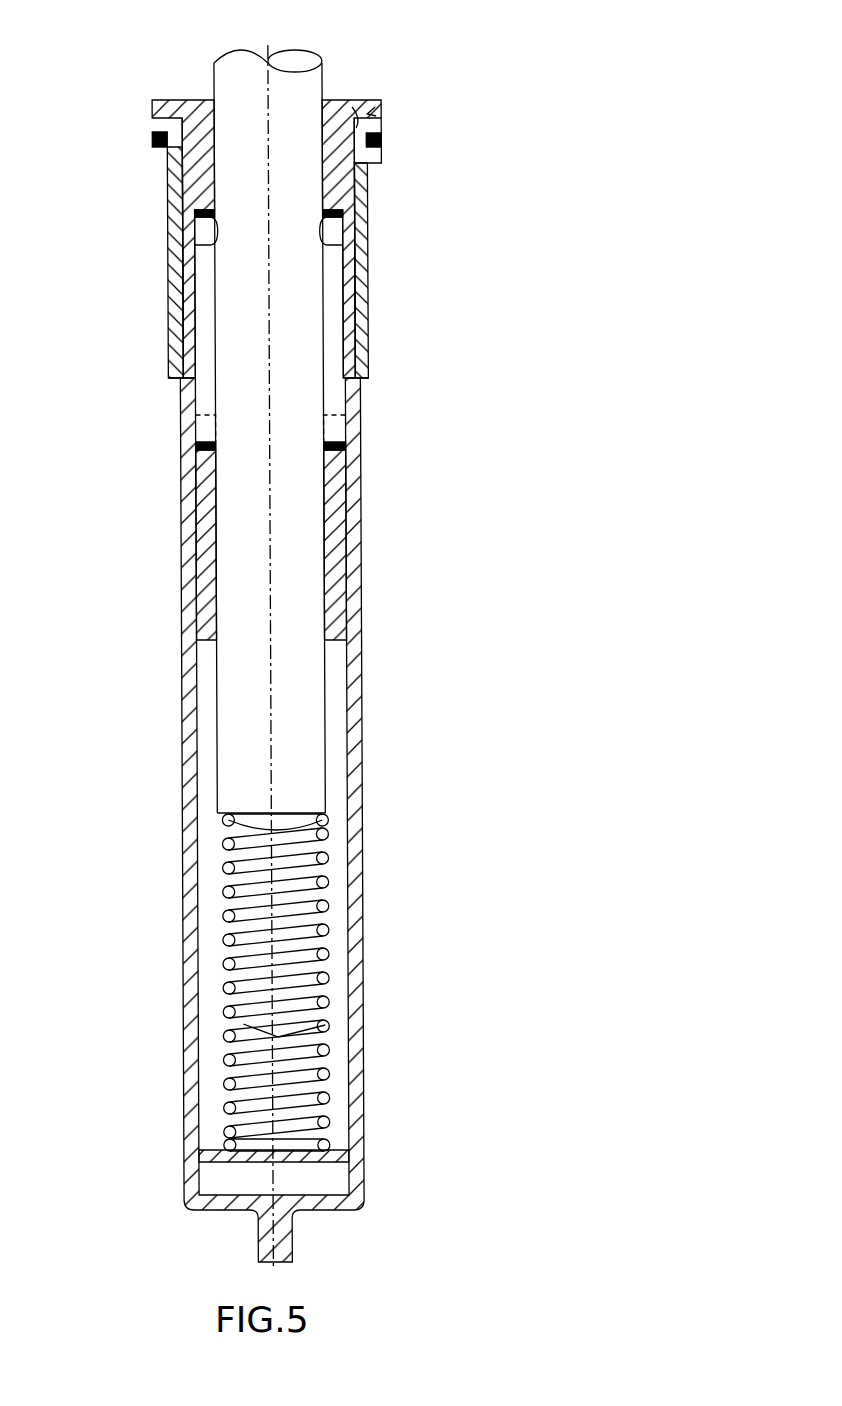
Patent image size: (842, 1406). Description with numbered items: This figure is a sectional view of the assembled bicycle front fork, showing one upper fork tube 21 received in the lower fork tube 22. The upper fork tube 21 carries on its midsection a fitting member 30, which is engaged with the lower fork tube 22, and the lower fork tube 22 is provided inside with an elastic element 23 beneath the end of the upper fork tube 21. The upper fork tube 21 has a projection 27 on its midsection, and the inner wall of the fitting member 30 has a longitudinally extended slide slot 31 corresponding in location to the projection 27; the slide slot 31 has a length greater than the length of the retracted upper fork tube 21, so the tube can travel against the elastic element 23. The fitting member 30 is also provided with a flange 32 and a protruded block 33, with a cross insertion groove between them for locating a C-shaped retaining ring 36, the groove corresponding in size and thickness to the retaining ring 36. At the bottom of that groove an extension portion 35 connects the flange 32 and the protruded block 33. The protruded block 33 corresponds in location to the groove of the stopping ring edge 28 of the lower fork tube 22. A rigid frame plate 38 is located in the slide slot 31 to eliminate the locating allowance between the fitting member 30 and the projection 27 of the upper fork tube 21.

The upper fork tube 21 is at (232, 86).
The lower fork tube 22 is at (355, 837).
The elastic element 23 is at (326, 981).
The projection 27 is at (333, 233).
The stopping ring edge 28 is at (158, 124).
The fitting member 30 is at (350, 330).
The slide slot 31 is at (205, 287).
The flange 32 is at (372, 112).
The protruded block 33 is at (382, 157).
The extension portion 35 is at (357, 125).
The C-shaped retaining ring 36 is at (153, 135).
The rigid frame plate 38 is at (203, 209).